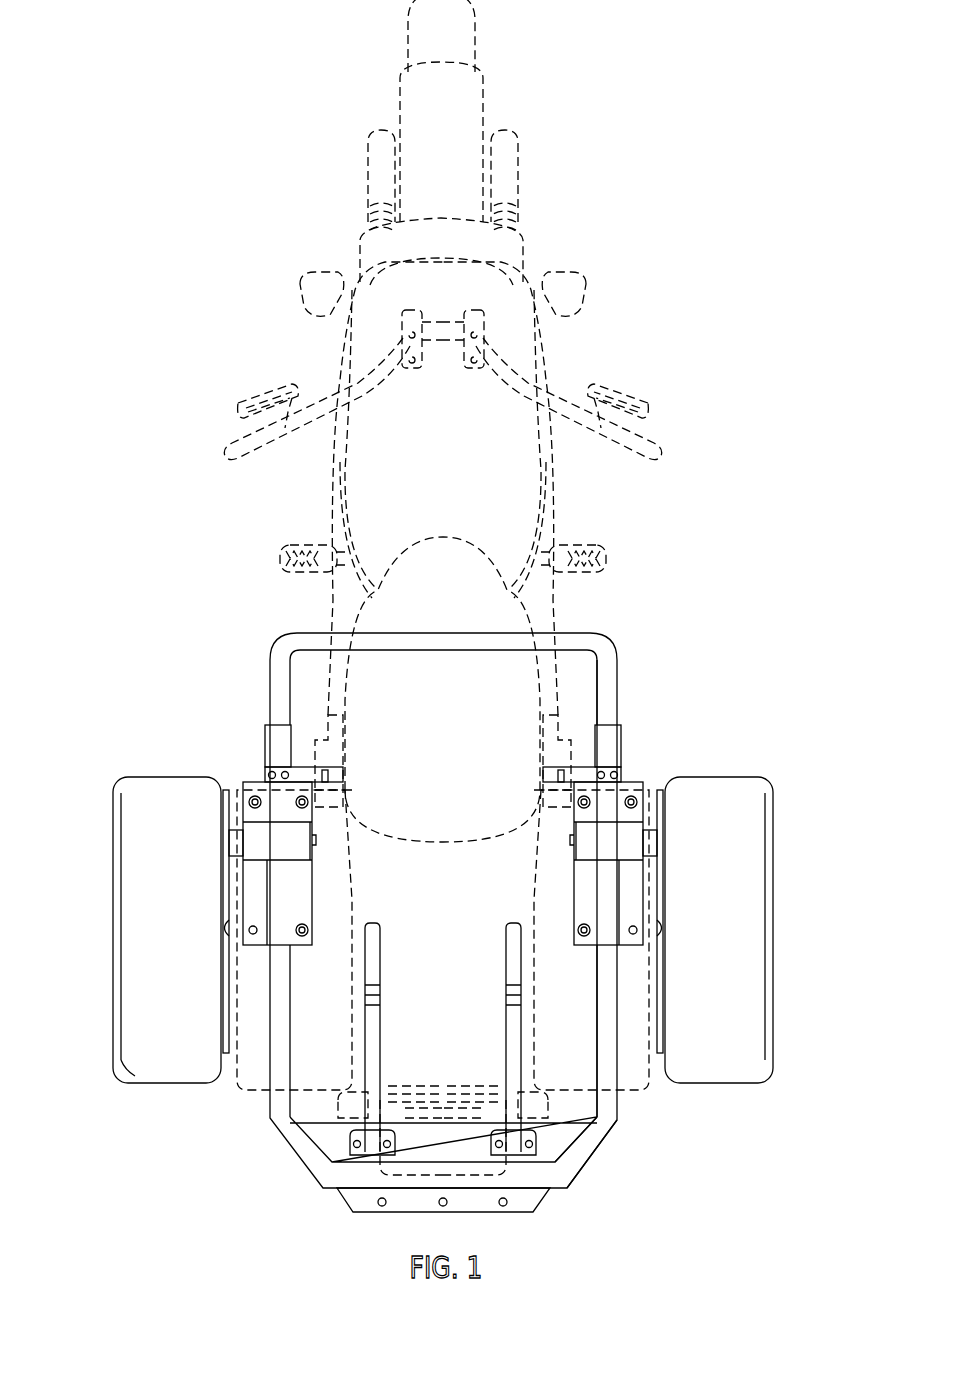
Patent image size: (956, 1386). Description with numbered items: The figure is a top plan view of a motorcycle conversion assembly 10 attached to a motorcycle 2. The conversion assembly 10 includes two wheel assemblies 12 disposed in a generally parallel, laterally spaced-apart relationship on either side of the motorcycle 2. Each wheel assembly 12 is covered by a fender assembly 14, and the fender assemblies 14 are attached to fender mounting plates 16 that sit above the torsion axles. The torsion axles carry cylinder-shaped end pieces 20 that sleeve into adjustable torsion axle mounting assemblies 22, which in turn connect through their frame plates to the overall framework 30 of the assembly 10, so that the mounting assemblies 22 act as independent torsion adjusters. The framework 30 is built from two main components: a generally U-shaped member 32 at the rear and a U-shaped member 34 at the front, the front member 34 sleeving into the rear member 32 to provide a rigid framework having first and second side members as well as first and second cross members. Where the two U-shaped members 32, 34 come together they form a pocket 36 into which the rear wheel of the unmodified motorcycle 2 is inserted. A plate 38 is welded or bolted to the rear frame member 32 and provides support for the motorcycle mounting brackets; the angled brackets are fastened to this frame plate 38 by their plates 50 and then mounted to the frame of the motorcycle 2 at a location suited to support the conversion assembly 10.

The motorcycle 2 is at (167, 105).
The motorcycle conversion assembly 10 is at (442, 924).
The wheel assemblies 12 is at (442, 925).
The fender assemblies 14 is at (148, 795).
The fender mounting plates 16 is at (233, 962).
The cylinder-shaped end pieces 20 is at (243, 795).
The adjustable torsion axle mounting assemblies 22 is at (280, 830).
The framework 30 is at (428, 929).
The U-shaped member 32 is at (595, 1133).
The U-shaped member 34 is at (582, 636).
The pocket 36 is at (173, 1085).
The plate 38 is at (480, 1200).
The plates 50 is at (355, 1153).